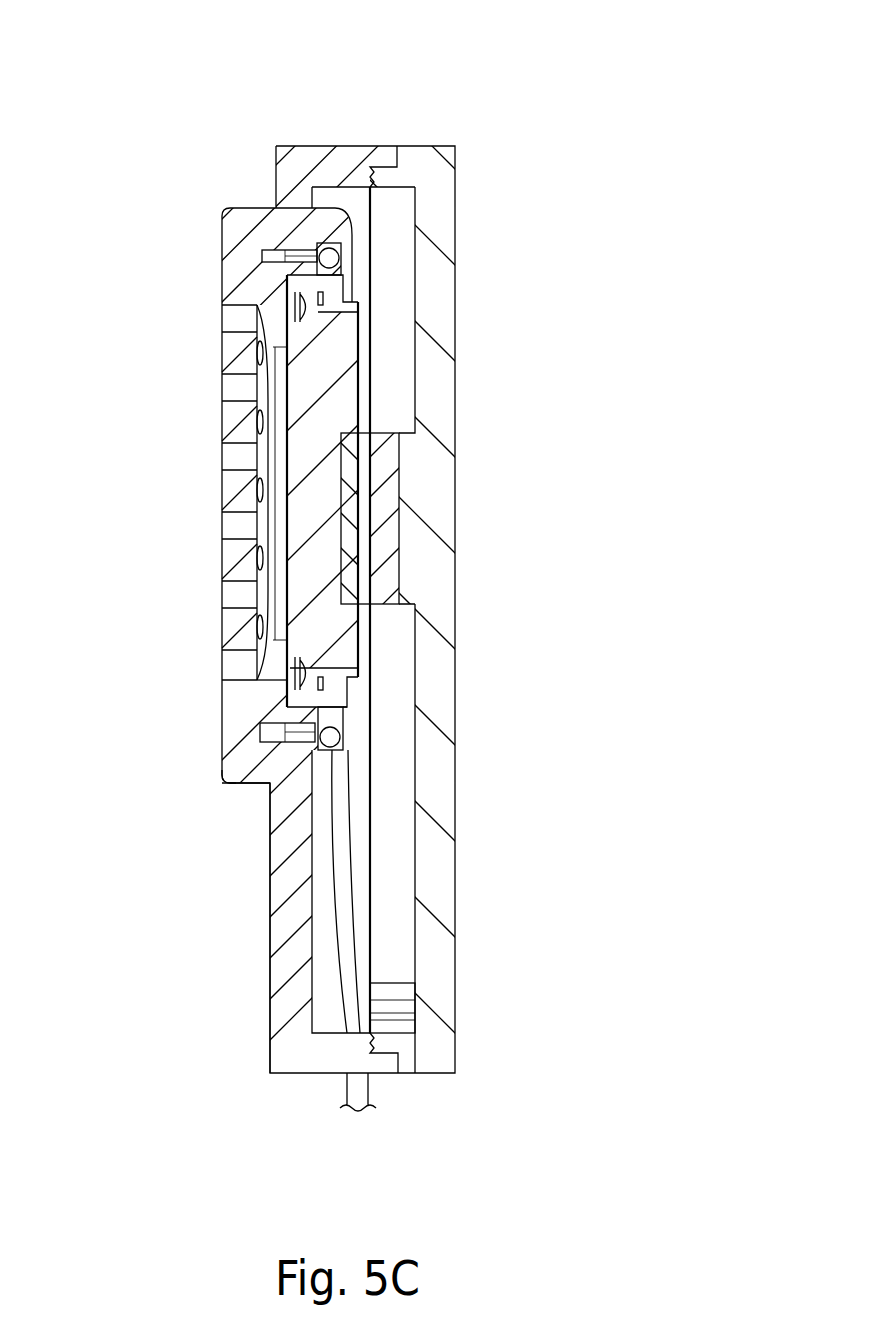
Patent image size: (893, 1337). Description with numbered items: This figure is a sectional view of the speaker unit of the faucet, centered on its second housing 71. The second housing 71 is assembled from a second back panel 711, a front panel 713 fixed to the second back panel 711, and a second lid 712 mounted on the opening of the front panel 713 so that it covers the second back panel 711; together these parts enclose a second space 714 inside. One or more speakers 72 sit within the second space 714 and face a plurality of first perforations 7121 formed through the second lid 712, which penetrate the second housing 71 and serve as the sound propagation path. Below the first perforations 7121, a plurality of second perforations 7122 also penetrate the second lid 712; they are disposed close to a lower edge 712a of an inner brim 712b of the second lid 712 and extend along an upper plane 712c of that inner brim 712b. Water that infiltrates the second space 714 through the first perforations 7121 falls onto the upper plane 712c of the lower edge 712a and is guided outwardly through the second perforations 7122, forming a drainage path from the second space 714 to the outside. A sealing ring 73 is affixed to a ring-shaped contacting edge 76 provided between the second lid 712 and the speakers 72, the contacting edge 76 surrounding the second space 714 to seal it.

The second housing 71 is at (452, 43).
The second back panel 711 is at (416, 153).
The second lid 712 is at (242, 220).
The front panel 713 is at (346, 153).
The first perforations 7121 is at (240, 395).
The second perforations 7122 is at (238, 663).
The lower edge 712a is at (222, 783).
The inner brim 712b is at (297, 763).
The upper plane 712c is at (270, 687).
The speaker 72 is at (340, 355).
The sealing ring 73 is at (335, 742).
The ring-shaped contacting edge 76 is at (337, 712).
The second space 714 is at (375, 952).